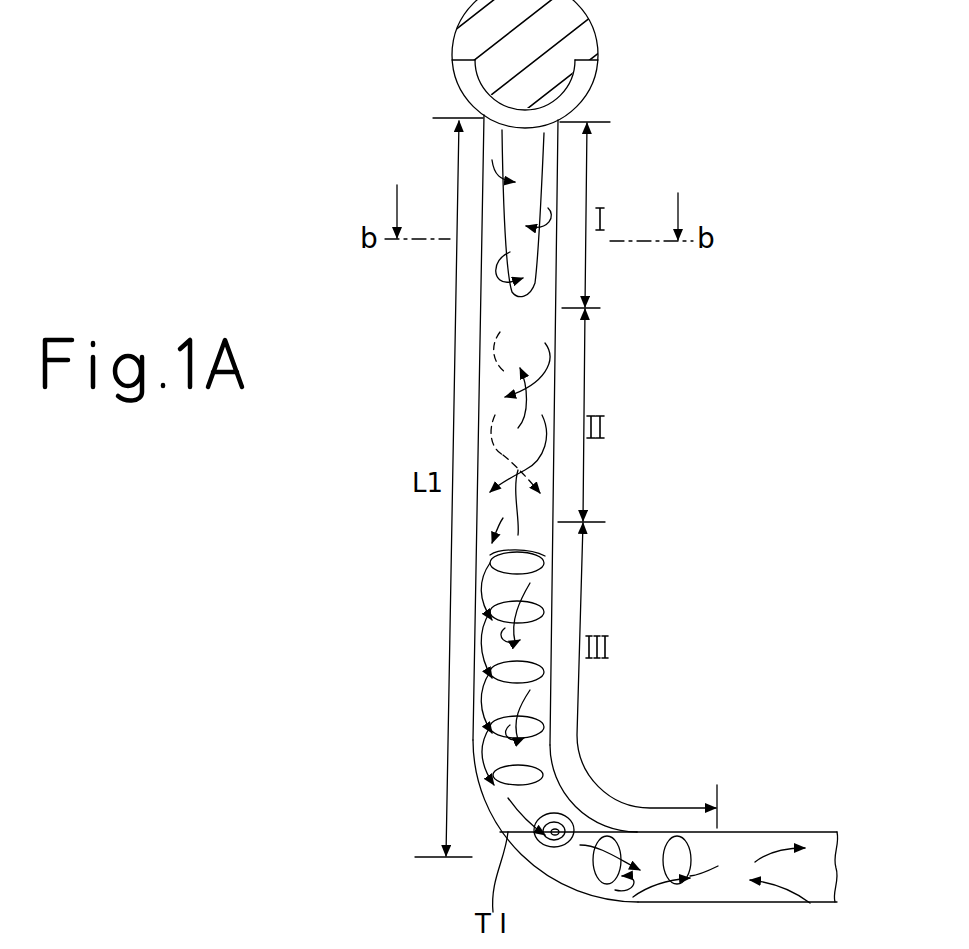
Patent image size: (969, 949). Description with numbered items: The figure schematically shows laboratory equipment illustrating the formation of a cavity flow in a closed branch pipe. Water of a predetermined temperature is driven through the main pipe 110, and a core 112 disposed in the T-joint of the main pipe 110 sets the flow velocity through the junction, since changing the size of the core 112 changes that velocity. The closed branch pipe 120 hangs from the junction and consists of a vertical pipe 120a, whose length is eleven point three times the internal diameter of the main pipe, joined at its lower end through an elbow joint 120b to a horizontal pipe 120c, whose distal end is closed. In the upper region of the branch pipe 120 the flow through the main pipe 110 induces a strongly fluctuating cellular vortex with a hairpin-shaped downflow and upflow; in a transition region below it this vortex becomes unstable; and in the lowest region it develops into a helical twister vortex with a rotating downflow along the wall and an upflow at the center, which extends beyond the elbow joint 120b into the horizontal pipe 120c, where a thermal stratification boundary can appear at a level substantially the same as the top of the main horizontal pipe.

The main pipe 110 is at (456, 84).
The core 112 is at (573, 31).
The branch pipe 120 is at (562, 509).
The vertical pipe 120a is at (557, 343).
The elbow joint 120b is at (560, 803).
The horizontal pipe 120c is at (797, 833).